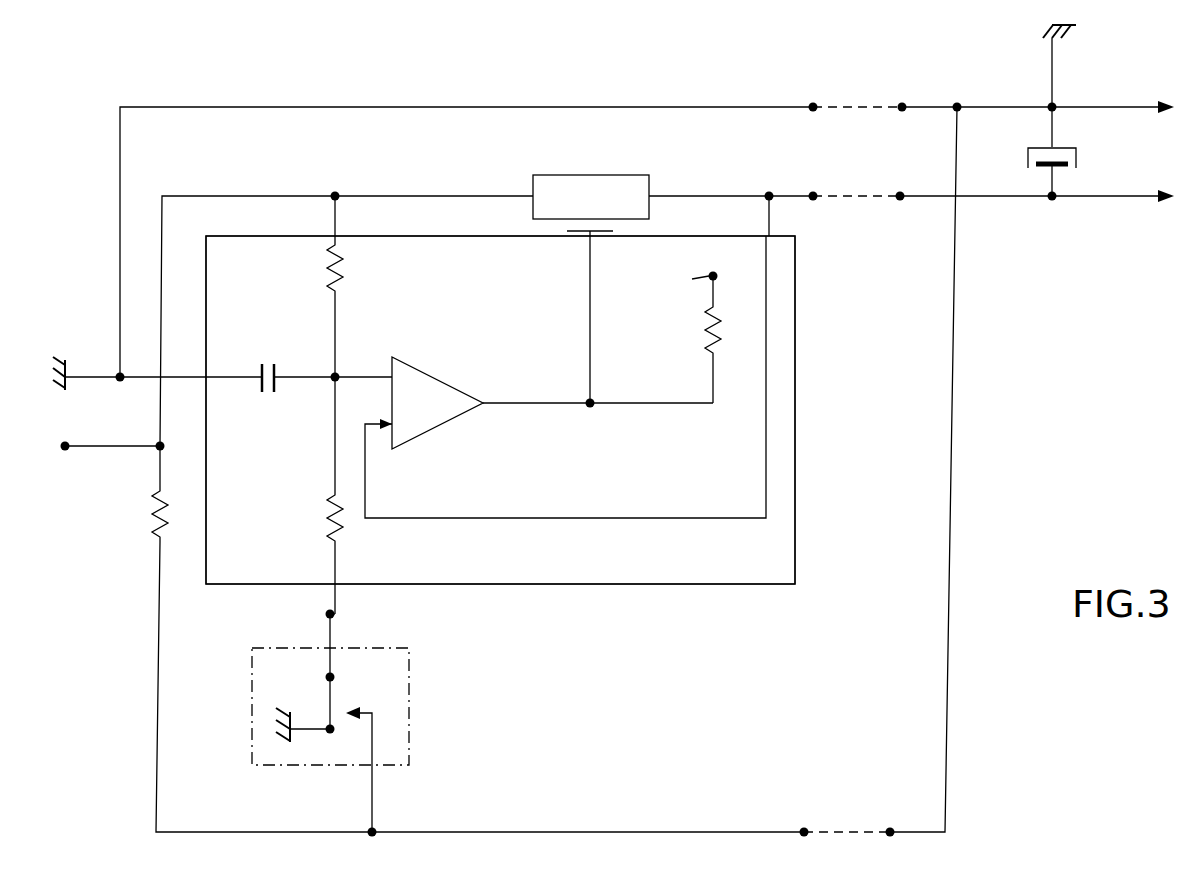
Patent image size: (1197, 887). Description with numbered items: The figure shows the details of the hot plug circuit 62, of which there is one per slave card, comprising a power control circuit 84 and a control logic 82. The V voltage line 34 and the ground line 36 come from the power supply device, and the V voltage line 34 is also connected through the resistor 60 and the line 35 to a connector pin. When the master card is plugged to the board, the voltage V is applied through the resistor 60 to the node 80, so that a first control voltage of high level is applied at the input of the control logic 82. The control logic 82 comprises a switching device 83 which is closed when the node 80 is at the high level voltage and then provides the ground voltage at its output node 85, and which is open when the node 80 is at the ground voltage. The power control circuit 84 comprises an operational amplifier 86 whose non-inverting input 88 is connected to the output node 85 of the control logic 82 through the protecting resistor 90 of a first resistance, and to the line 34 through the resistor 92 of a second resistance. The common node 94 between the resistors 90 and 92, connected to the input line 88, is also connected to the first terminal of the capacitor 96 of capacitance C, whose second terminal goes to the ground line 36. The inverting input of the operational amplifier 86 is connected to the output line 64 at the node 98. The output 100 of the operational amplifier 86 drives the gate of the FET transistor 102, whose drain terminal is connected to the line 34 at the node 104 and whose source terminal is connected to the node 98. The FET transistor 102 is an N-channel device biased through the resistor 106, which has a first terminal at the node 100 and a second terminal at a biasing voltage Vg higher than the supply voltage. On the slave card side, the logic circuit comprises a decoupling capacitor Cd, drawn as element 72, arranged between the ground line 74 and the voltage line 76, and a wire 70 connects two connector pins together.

The V voltage line 34 is at (390, 197).
The line 35 is at (779, 817).
The ground line 36 is at (250, 104).
The resistor 60 is at (217, 637).
The hot plug circuit 62 is at (830, 365).
The output line 64 is at (792, 199).
The wire 70 is at (951, 437).
The capacitor Cd 72 is at (1068, 151).
The ground line 74 is at (928, 105).
The voltage line 76 is at (923, 195).
The node 80 is at (373, 838).
The control logic 82 is at (413, 758).
The switching device 83 is at (322, 708).
The power control circuit 84 is at (757, 595).
The output node 85 is at (334, 614).
The operational amplifier 86 is at (447, 421).
The non-inverting input 88 is at (366, 374).
The protecting resistor 90 is at (323, 505).
The resistor 92 is at (329, 262).
The common node 94 is at (331, 381).
The capacitor 96 is at (262, 363).
The node 98 is at (769, 192).
The output 100 is at (590, 405).
The FET transistor 102 is at (627, 174).
The node 104 is at (334, 193).
The resistor 106 is at (707, 360).